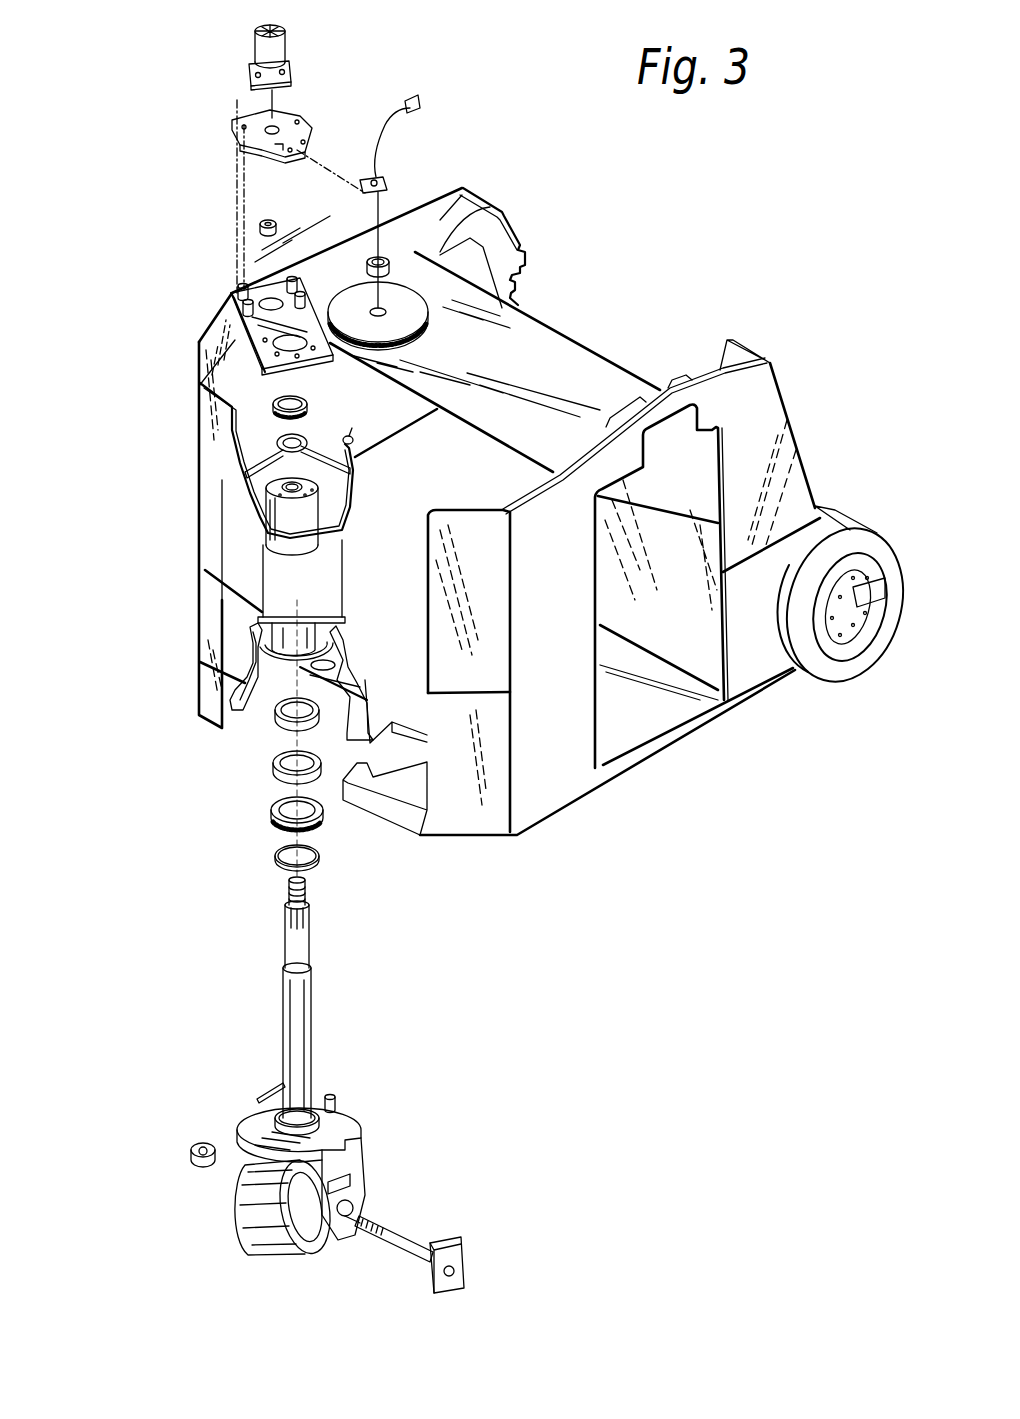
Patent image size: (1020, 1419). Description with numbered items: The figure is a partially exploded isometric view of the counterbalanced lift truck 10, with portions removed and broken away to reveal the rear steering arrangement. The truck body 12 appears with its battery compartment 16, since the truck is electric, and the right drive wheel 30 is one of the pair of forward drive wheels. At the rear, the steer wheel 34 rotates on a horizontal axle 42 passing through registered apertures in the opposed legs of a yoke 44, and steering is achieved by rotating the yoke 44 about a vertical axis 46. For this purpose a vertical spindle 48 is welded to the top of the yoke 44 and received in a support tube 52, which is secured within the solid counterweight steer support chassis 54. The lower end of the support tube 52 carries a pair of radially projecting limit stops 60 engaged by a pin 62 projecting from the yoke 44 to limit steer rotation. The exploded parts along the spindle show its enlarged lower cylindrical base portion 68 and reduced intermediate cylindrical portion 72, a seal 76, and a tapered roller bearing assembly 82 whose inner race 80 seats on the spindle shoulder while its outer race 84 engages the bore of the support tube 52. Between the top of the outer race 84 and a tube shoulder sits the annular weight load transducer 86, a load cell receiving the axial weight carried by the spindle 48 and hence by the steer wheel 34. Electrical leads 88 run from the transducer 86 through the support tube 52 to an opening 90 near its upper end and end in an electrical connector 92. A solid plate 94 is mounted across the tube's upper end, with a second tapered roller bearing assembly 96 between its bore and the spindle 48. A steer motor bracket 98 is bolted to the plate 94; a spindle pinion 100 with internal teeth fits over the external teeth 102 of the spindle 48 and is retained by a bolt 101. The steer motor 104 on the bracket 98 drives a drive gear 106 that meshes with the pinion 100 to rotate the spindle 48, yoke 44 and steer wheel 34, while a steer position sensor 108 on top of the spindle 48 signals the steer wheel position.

The counterbalanced lift truck 10 is at (172, 500).
The truck body 12 is at (567, 763).
The battery compartment 16 is at (700, 622).
The right drive wheel 30 is at (877, 637).
The rear steer wheel 34 is at (265, 1213).
The horizontal axle 42 is at (420, 1212).
The yoke 44 is at (355, 1122).
The vertical axis 46 is at (307, 873).
The vertical spindle 48 is at (312, 1045).
The support tube 52 is at (277, 517).
The counterweight steer support chassis 54 is at (330, 527).
The limit stops 60 is at (253, 645).
The pin 62 is at (335, 1102).
The lower cylindrical base portion 68 is at (252, 1108).
The intermediate cylindrical portion 72 is at (275, 1093).
The seal 76 is at (277, 857).
The inner race 80 is at (283, 832).
The tapered roller bearing assembly 82 is at (275, 808).
The outer race 84 is at (280, 770).
The annular weight load transducer 86 is at (278, 715).
The electrical leads 88 is at (352, 500).
The opening 90 is at (297, 517).
The electrical connector 92 is at (351, 430).
The solid plate 94 is at (265, 478).
The tapered roller bearing assembly 96 is at (270, 400).
The steer motor bracket 98 is at (230, 320).
The spindle pinion 100 is at (407, 317).
The bolt 101 is at (476, 198).
The external teeth 102 is at (305, 920).
The steer motor 104 is at (253, 50).
The drive gear 106 is at (259, 227).
The steer position sensor 108 is at (383, 172).